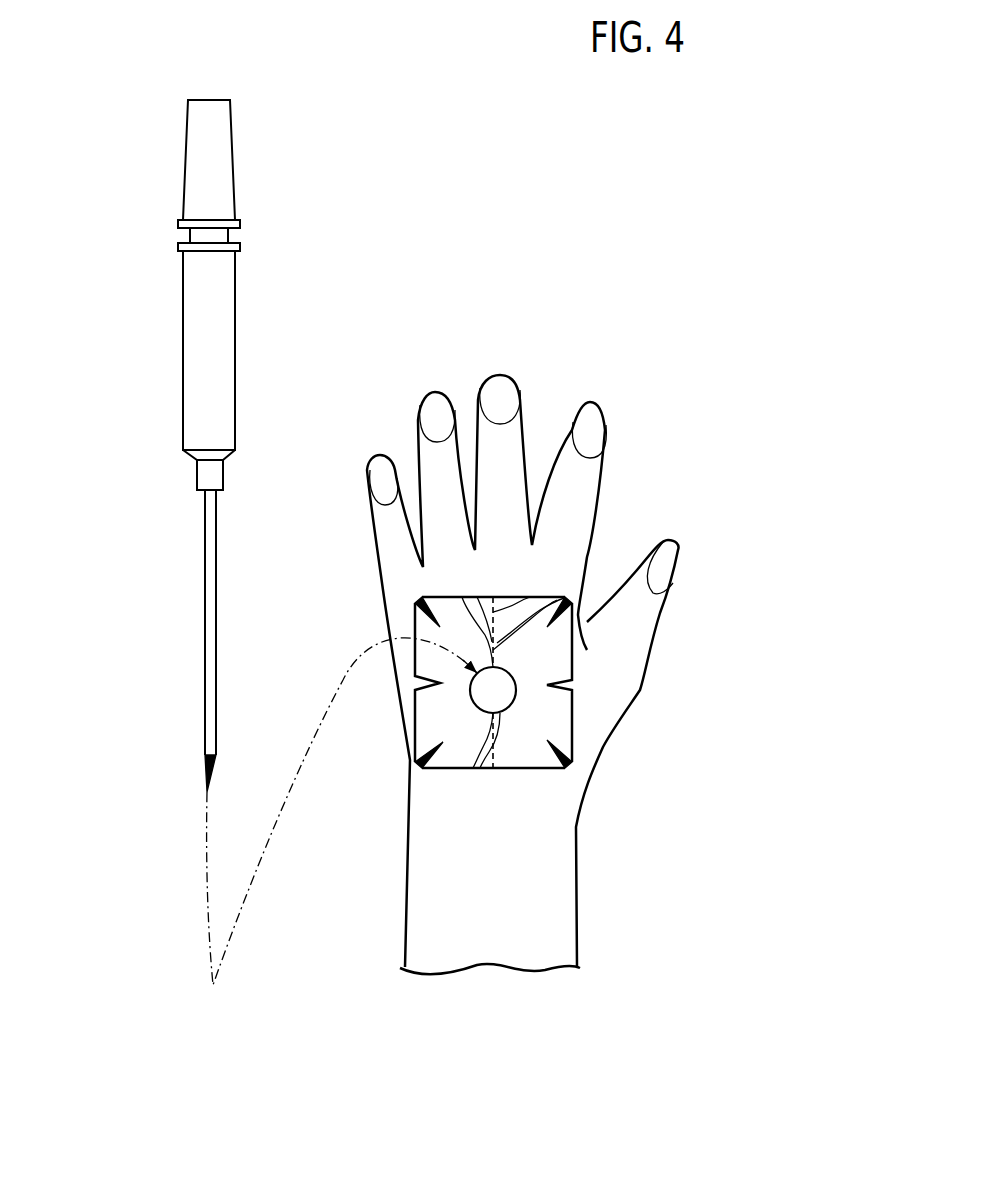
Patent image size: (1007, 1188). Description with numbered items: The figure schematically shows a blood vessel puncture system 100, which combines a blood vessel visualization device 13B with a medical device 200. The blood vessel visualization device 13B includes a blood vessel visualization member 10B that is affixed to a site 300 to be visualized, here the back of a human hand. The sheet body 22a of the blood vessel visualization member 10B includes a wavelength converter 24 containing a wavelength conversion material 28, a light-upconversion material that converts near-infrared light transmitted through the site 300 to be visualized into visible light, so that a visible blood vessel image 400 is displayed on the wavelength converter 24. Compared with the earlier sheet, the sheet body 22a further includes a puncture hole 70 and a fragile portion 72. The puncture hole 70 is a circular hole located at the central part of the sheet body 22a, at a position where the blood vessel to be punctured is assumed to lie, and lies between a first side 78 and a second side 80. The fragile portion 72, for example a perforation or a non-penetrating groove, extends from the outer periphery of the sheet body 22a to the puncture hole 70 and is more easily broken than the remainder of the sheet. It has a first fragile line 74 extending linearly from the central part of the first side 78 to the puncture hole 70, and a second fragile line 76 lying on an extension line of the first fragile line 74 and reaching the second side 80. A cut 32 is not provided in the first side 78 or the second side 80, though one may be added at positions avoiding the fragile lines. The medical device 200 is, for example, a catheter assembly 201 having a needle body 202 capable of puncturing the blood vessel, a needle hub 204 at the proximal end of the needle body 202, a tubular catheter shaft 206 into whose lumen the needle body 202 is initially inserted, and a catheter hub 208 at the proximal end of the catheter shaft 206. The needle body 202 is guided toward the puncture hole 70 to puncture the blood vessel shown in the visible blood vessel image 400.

The blood vessel puncture system 100 is at (155, 65).
The medical device 200 is at (168, 272).
The catheter assembly 201 is at (155, 446).
The needle hub 204 is at (202, 137).
The catheter hub 208 is at (197, 315).
The catheter shaft 206 is at (205, 575).
The needle body 202 is at (205, 765).
The site to be visualized 300 is at (553, 660).
The blood vessel visualization member 10B is at (507, 597).
The wavelength converter 24 is at (550, 712).
The wavelength conversion material 28 is at (498, 727).
The sheet body 22a is at (415, 715).
The blood vessel visualization device 13B is at (405, 618).
The cut 32 is at (567, 757).
The second side 80 is at (540, 770).
The puncture hole 70 is at (488, 698).
The fragile portion 72 is at (577, 678).
The first fragile line 74 is at (530, 597).
The second fragile line 76 is at (495, 752).
The first side 78 is at (445, 597).
The visible blood vessel image 400 is at (470, 632).